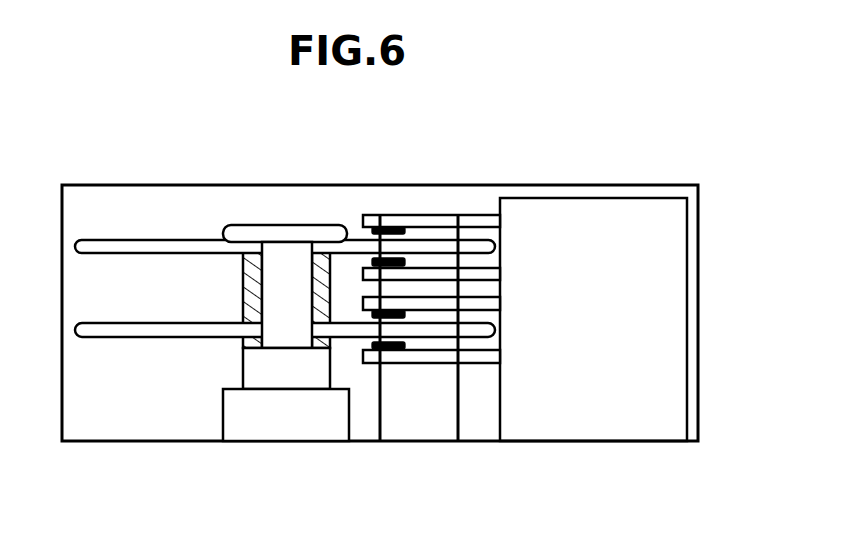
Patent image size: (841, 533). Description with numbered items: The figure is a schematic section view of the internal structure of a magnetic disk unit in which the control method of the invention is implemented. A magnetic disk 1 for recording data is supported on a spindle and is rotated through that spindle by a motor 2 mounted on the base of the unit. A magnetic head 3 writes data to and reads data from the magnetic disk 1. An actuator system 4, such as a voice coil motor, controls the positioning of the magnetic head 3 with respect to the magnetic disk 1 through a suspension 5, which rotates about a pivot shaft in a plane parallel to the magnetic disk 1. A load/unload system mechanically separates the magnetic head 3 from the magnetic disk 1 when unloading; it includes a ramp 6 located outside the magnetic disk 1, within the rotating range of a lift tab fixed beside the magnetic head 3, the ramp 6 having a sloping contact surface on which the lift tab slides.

The magnetic disk 1 is at (138, 323).
The motor 2 is at (275, 422).
The magnetic head 3 is at (408, 259).
The actuator system 4 is at (667, 280).
The suspension 5 is at (447, 268).
The ramp 6 is at (427, 423).